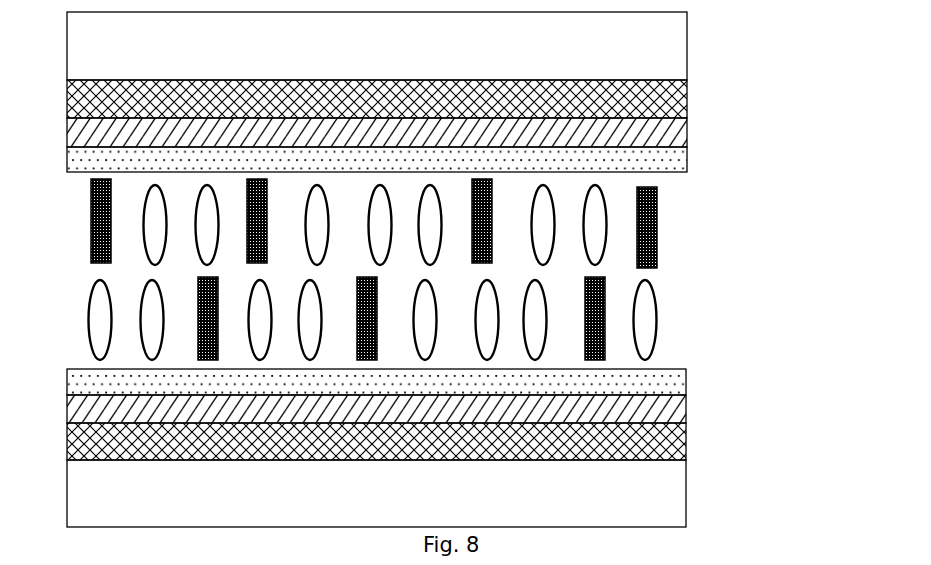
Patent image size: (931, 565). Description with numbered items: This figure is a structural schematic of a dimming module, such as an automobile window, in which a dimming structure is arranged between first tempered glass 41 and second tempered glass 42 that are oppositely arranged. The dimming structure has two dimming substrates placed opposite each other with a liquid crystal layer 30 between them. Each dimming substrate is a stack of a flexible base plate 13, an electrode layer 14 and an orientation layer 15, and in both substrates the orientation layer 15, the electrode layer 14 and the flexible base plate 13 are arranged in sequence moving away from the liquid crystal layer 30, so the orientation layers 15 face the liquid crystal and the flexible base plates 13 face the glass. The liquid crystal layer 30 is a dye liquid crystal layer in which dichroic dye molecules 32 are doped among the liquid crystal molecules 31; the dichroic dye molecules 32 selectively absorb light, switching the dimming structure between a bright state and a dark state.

The second tempered glass 42 is at (633, 53).
The first tempered glass 41 is at (633, 502).
The flexible base plate 13 is at (643, 100).
The electrode layer 14 is at (648, 128).
The orientation layer 15 is at (648, 160).
The liquid crystal layer 30 is at (452, 269).
The liquid crystal molecules 31 is at (593, 224).
The dichroic dye molecules 32 is at (418, 318).